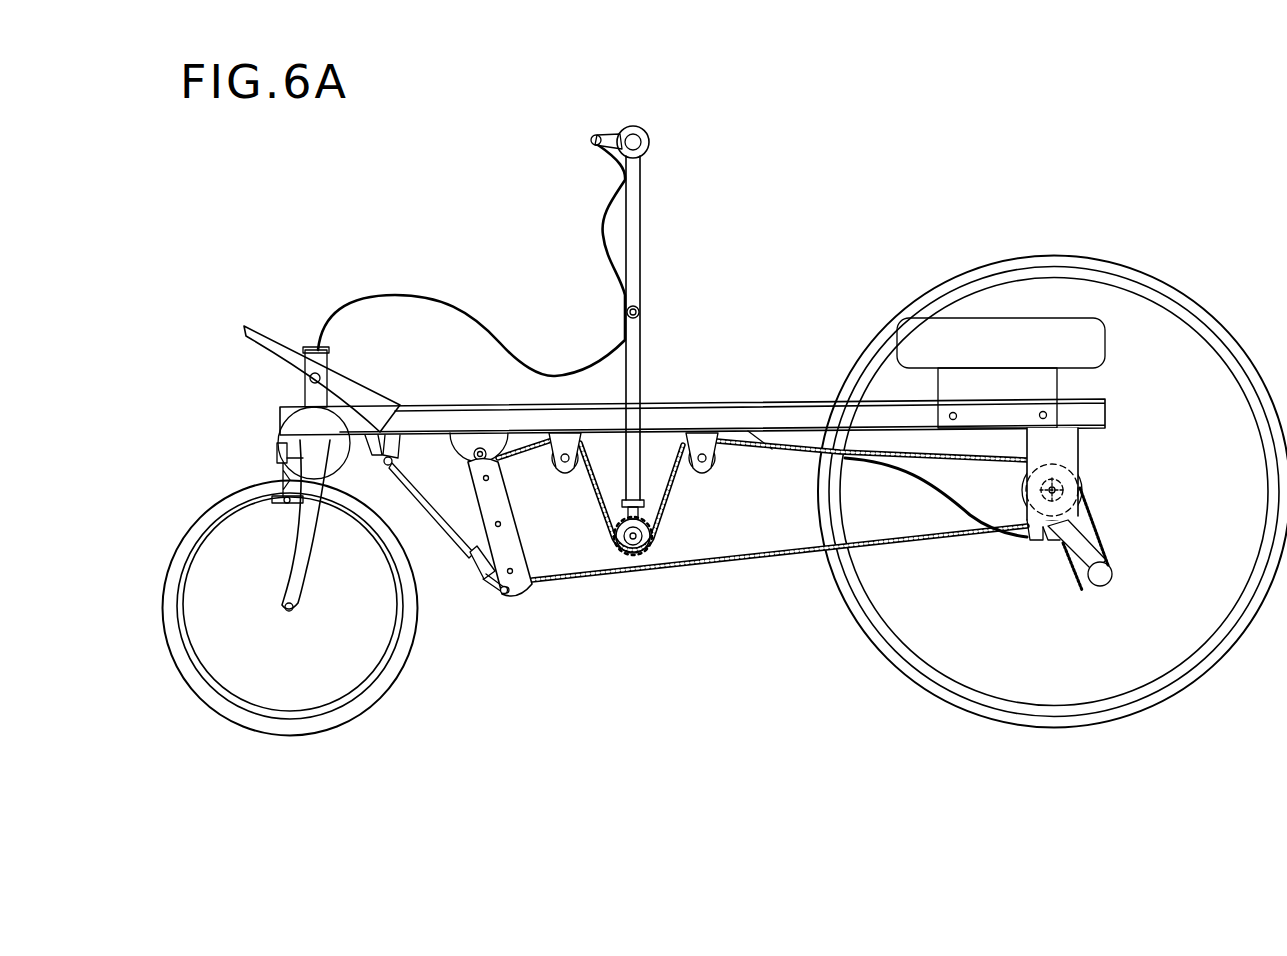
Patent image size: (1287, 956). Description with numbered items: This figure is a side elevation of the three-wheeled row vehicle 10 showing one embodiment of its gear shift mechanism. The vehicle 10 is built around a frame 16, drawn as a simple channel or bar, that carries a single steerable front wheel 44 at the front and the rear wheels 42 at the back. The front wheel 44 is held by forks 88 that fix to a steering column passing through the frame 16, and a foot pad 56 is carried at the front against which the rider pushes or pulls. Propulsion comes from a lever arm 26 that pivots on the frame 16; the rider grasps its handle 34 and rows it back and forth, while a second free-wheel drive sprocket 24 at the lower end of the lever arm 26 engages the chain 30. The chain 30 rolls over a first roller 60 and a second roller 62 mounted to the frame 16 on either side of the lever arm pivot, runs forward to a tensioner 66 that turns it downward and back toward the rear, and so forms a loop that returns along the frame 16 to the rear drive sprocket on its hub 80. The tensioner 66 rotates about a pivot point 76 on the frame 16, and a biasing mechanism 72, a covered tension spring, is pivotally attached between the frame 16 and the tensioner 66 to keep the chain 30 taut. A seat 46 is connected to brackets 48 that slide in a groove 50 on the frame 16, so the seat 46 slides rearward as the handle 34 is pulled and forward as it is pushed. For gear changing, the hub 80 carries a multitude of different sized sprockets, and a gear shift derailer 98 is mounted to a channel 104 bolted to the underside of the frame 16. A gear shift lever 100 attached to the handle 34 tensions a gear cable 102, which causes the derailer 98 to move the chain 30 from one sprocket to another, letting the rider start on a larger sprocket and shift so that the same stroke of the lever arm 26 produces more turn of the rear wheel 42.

The row vehicle 10 is at (808, 169).
The frame 16 is at (775, 400).
The second free-wheel drive sprocket 24 is at (652, 548).
The lever arm 26 is at (643, 358).
The chain 30 is at (690, 568).
The handle 34 is at (649, 137).
The rear wheel 42 is at (1152, 276).
The front wheel 44 is at (232, 492).
The seat 46 is at (1108, 328).
The bracket 48 is at (1012, 406).
The groove 50 is at (719, 430).
The foot pad 56 is at (247, 323).
The first roller 60 is at (714, 467).
The second roller 62 is at (558, 470).
The tensioner 66 is at (522, 596).
The biasing mechanism 72 is at (480, 572).
The pivot point 76 is at (480, 448).
The hub 80 is at (1050, 540).
The forks 88 is at (292, 555).
The gear shift derailer 98 is at (1112, 578).
The gear shift lever 100 is at (596, 136).
The gear cable 102 is at (920, 474).
The channel 104 is at (1080, 440).